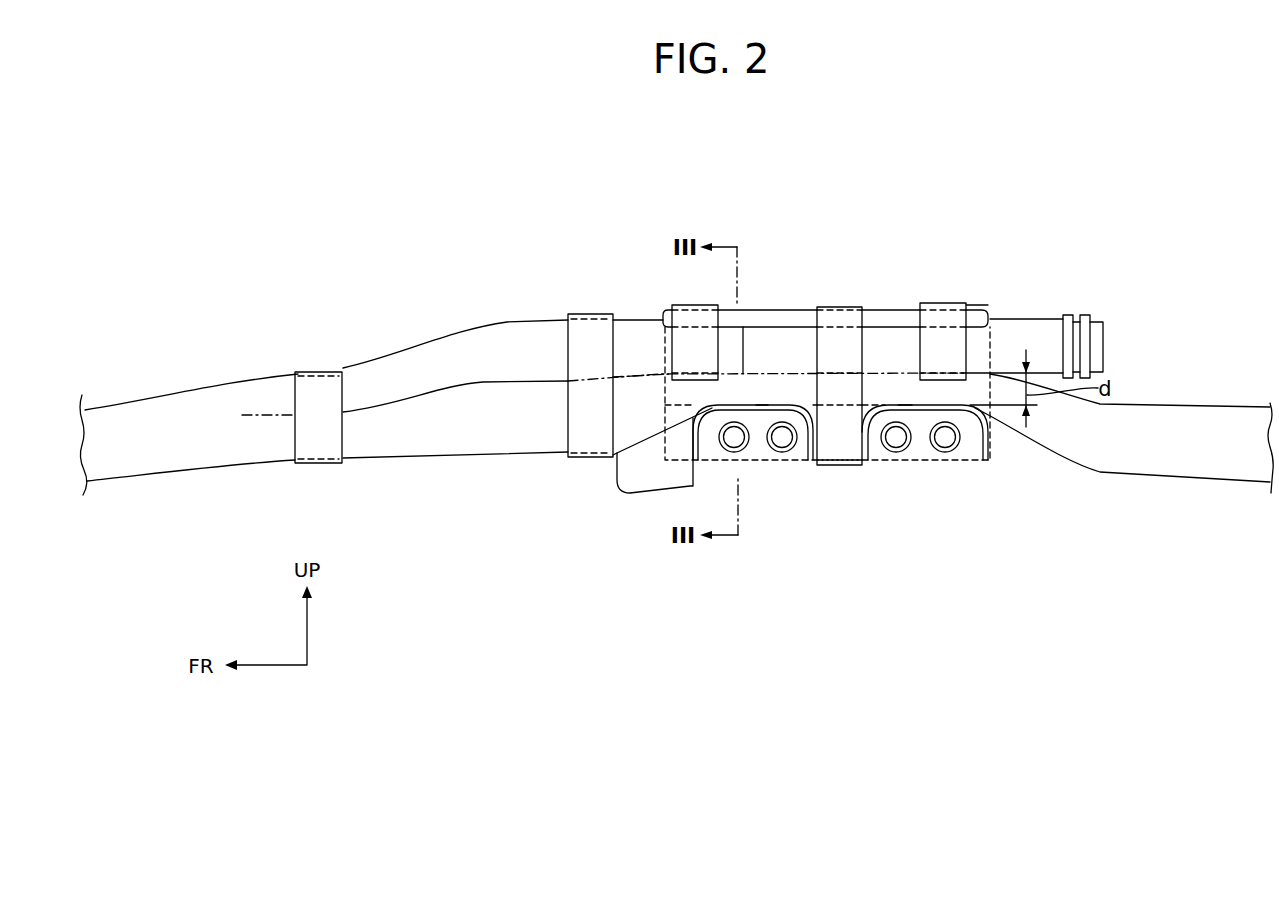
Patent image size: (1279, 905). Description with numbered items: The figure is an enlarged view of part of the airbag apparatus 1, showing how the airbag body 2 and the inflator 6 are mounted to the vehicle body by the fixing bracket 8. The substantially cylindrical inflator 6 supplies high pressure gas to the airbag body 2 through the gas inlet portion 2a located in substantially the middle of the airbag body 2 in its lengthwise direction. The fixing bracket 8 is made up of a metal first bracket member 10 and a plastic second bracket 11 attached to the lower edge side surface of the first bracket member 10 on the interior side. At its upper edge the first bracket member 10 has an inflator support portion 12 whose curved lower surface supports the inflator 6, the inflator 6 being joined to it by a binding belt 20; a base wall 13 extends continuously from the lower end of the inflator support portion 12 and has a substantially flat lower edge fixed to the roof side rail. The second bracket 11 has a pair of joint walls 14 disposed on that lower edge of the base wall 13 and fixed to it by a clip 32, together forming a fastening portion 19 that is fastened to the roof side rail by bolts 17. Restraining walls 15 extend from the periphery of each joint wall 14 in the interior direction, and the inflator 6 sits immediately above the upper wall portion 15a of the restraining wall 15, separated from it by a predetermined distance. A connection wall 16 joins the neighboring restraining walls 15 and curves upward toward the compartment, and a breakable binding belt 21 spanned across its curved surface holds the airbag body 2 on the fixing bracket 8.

The airbag apparatus 1 is at (1095, 164).
The airbag body 2 is at (1188, 418).
The gas inlet portion 2a is at (642, 338).
The inflator 6 is at (1045, 330).
The fixing bracket 8 is at (983, 210).
The first bracket member 10 is at (977, 300).
The second bracket 11 is at (974, 393).
The inflator support portion 12 is at (755, 310).
The base wall 13 is at (663, 405).
The joint wall 14 is at (814, 515).
The restraining wall 15 is at (762, 402).
The upper wall portion 15a is at (833, 281).
The connection wall 16 is at (840, 450).
The bolt 17 is at (736, 445).
The fastening portion 19 is at (705, 445).
The binding belt 20 is at (683, 305).
The breakable binding belt 21 is at (841, 307).
The clip 32 is at (785, 450).